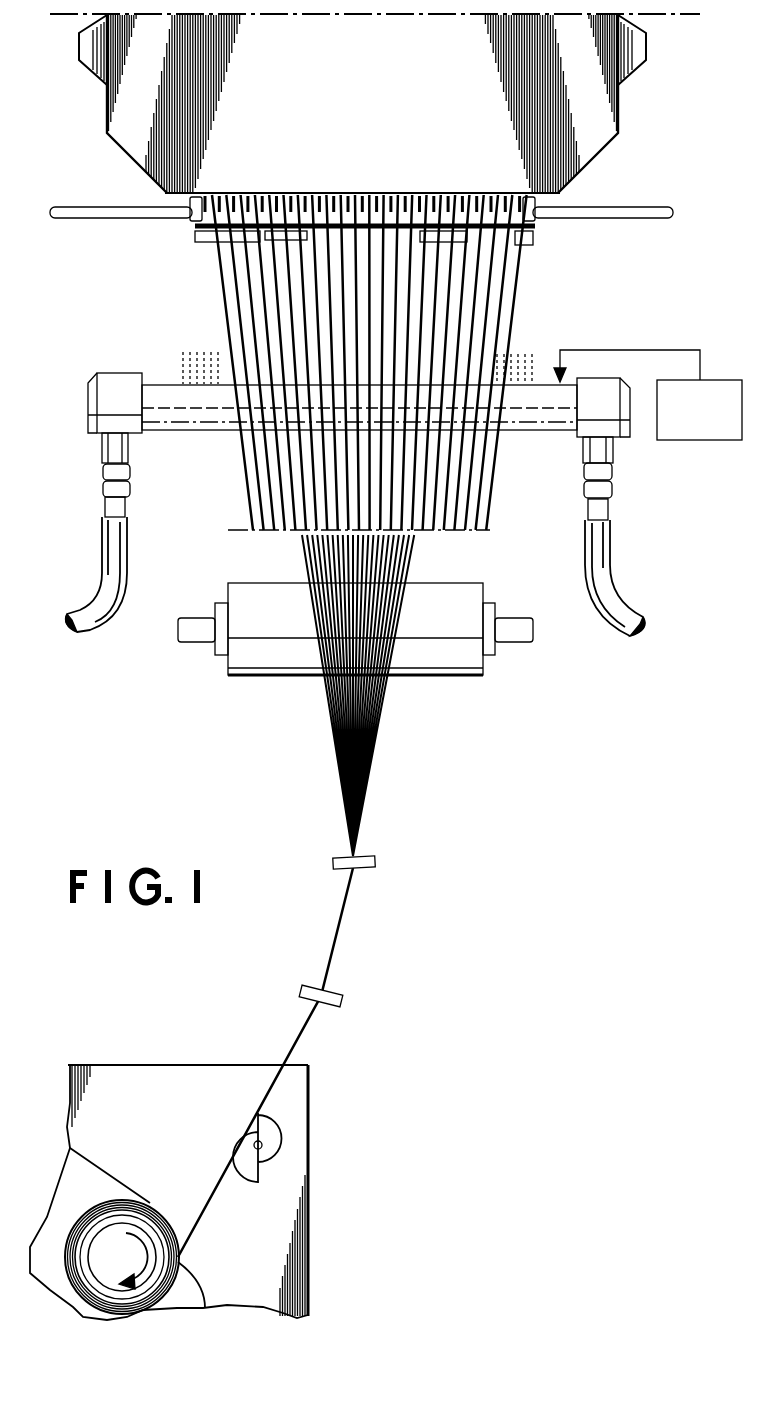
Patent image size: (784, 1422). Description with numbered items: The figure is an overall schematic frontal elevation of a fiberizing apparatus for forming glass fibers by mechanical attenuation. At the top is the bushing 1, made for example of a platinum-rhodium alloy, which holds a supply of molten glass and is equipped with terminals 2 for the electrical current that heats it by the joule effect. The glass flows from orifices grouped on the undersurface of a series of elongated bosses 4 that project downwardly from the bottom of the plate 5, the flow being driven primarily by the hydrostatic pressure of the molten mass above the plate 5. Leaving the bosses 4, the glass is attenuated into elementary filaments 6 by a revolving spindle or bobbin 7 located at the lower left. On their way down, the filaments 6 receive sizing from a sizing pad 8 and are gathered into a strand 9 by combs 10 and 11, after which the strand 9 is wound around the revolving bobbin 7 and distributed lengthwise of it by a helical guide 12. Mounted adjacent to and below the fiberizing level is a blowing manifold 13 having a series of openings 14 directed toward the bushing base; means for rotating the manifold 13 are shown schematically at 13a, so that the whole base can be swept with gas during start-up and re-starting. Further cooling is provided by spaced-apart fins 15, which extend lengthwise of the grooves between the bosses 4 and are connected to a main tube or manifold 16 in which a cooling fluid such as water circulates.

The bushing 1 is at (396, 131).
The terminals 2 is at (92, 47).
The bosses 4 is at (423, 194).
The plate 5 is at (540, 198).
The elementary filaments 6 is at (262, 492).
The revolving spindle or bobbin 7 is at (125, 1200).
The sizing pad 8 is at (287, 660).
The strand 9 is at (346, 914).
The comb 10 is at (375, 862).
The comb 11 is at (340, 1002).
The helical guide 12 is at (276, 1130).
The blowing manifold 13 is at (496, 424).
The means for rotating the manifold 13a is at (648, 395).
The openings 14 is at (227, 388).
The fins 15 is at (260, 243).
The main tube or manifold 16 is at (575, 219).